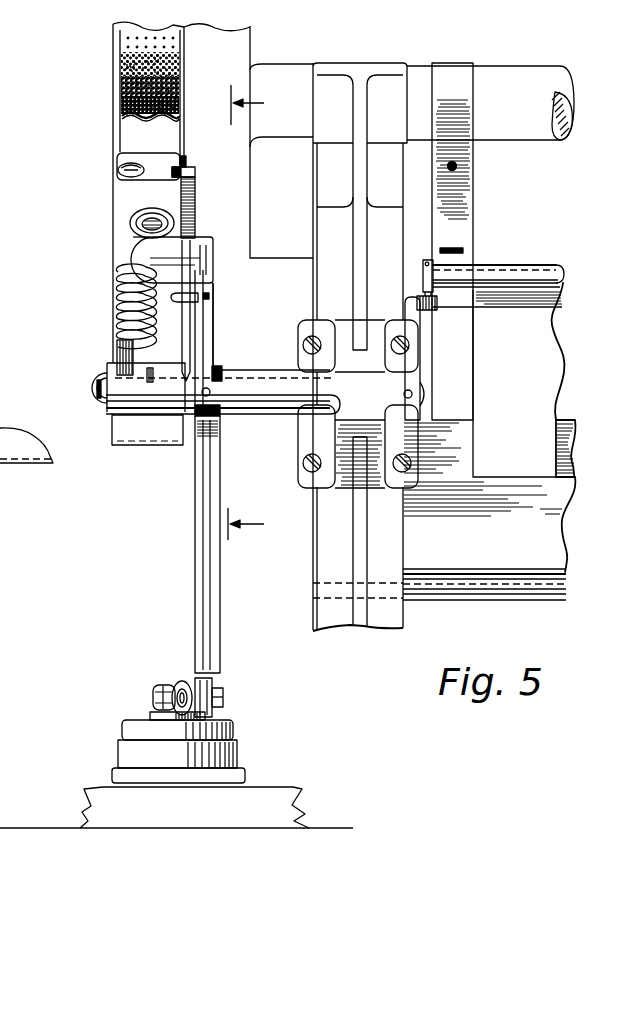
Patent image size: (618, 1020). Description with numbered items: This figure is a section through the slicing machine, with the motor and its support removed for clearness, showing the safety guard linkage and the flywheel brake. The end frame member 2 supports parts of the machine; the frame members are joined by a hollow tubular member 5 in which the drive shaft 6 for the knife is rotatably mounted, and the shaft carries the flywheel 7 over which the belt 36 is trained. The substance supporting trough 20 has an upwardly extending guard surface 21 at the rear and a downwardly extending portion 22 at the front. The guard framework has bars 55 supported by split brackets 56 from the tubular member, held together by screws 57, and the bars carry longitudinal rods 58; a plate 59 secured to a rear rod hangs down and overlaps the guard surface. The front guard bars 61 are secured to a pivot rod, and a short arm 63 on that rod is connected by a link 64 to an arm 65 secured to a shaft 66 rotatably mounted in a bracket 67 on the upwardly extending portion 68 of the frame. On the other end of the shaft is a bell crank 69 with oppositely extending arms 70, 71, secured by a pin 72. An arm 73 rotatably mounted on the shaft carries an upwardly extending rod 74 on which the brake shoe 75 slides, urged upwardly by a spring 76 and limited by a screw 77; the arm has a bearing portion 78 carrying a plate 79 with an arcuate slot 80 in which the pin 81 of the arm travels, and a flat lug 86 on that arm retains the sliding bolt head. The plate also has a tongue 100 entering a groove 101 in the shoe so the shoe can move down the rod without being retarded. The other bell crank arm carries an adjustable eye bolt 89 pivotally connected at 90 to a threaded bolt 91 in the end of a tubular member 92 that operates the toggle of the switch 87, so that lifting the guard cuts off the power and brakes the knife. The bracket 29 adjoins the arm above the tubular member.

The end frame member 2 is at (370, 67).
The hollow tubular member 5 is at (548, 78).
The drive shaft 6 is at (582, 104).
The flywheel 7 is at (122, 135).
The substance supporting trough 20 is at (565, 571).
The guard surface 21 is at (563, 424).
The downwardly extending portion 22 is at (565, 594).
The bracket 29 is at (246, 54).
The belt 36 is at (127, 47).
The bars 55 is at (466, 263).
The brackets 56 is at (463, 80).
The screws 57 is at (457, 166).
The rods 58 is at (543, 275).
The plate 59 is at (548, 357).
The bars 61 is at (423, 280).
The short arm 63 is at (423, 275).
The link 64 is at (420, 312).
The arm 65 is at (414, 355).
The shaft 66 is at (424, 396).
The bracket 67 is at (300, 472).
The upwardly extending portion 68 is at (325, 496).
The bell crank 69 is at (207, 377).
The arm 70 is at (205, 303).
The arm 71 is at (210, 467).
The pin 72 is at (210, 398).
The arm 73 is at (117, 357).
The rod 74 is at (120, 322).
The brake shoe 75 is at (120, 210).
The spring 76 is at (118, 268).
The screw 77 is at (117, 172).
The bearing portion 78 is at (140, 395).
The plate 79 is at (188, 337).
The arcuate slot 80 is at (132, 237).
The pin 81 is at (172, 298).
The flat lug 86 is at (147, 252).
The switch 87 is at (232, 748).
The adjustable eye bolt 89 is at (212, 686).
The pivot connection 90 is at (224, 695).
The threaded bolt 91 is at (178, 688).
The tubular member 92 is at (153, 695).
The tongue 100 is at (197, 172).
The groove 101 is at (187, 162).